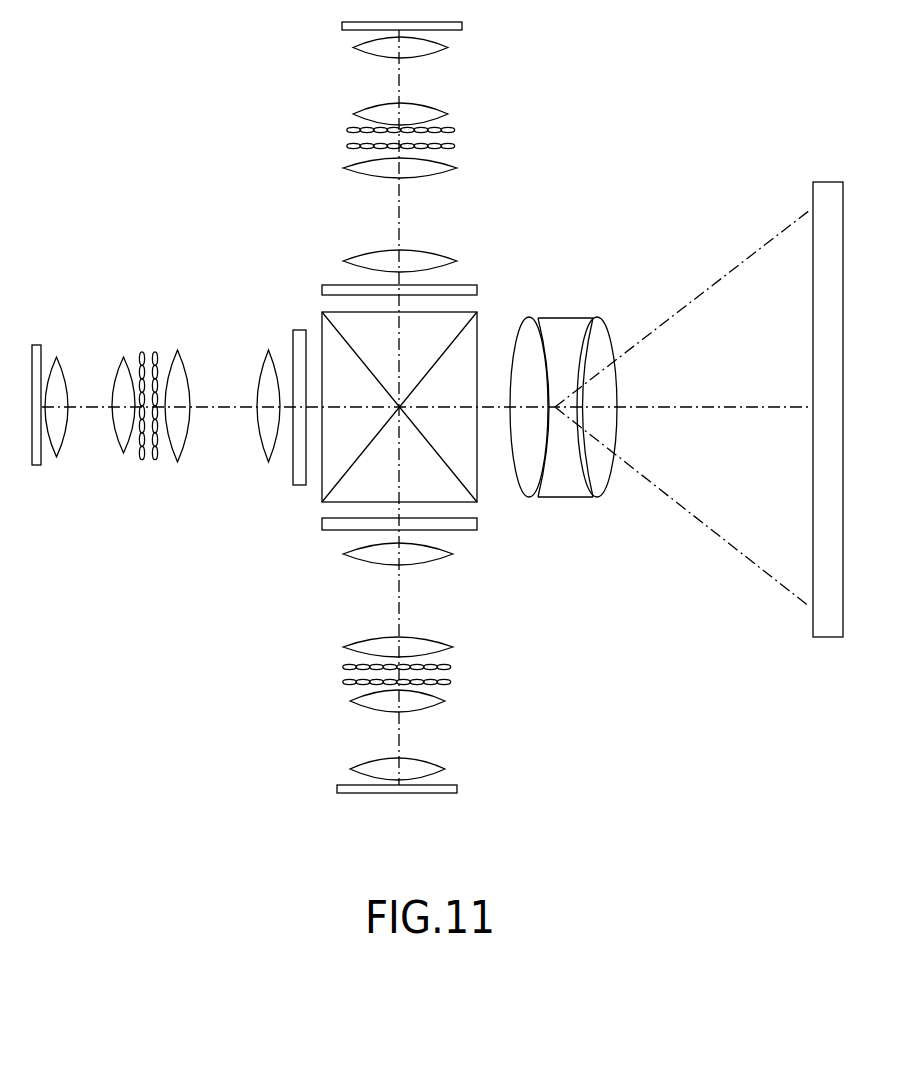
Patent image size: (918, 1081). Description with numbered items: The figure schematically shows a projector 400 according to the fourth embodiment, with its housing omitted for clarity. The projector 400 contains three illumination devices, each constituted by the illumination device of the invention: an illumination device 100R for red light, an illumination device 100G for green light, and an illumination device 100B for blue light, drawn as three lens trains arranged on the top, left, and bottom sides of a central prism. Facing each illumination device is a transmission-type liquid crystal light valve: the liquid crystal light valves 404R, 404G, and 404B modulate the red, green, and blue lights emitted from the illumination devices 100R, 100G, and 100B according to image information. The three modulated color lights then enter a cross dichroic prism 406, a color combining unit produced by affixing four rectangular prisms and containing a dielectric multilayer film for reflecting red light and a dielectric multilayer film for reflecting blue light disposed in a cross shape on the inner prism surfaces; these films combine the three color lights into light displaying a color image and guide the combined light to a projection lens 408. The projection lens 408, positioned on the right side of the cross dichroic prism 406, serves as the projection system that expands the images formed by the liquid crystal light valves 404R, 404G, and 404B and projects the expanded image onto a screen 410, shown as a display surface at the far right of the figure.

The projector 400 is at (163, 138).
The illumination device for red light 100R is at (478, 15).
The illumination device for green light 100G is at (285, 482).
The illumination device for blue light 100B is at (490, 538).
The liquid crystal light valve 404R is at (330, 288).
The liquid crystal light valve 404G is at (297, 333).
The liquid crystal light valve 404B is at (337, 525).
The cross dichroic prism 406 is at (478, 503).
The projection lens 408 is at (620, 317).
The screen 410 is at (828, 193).